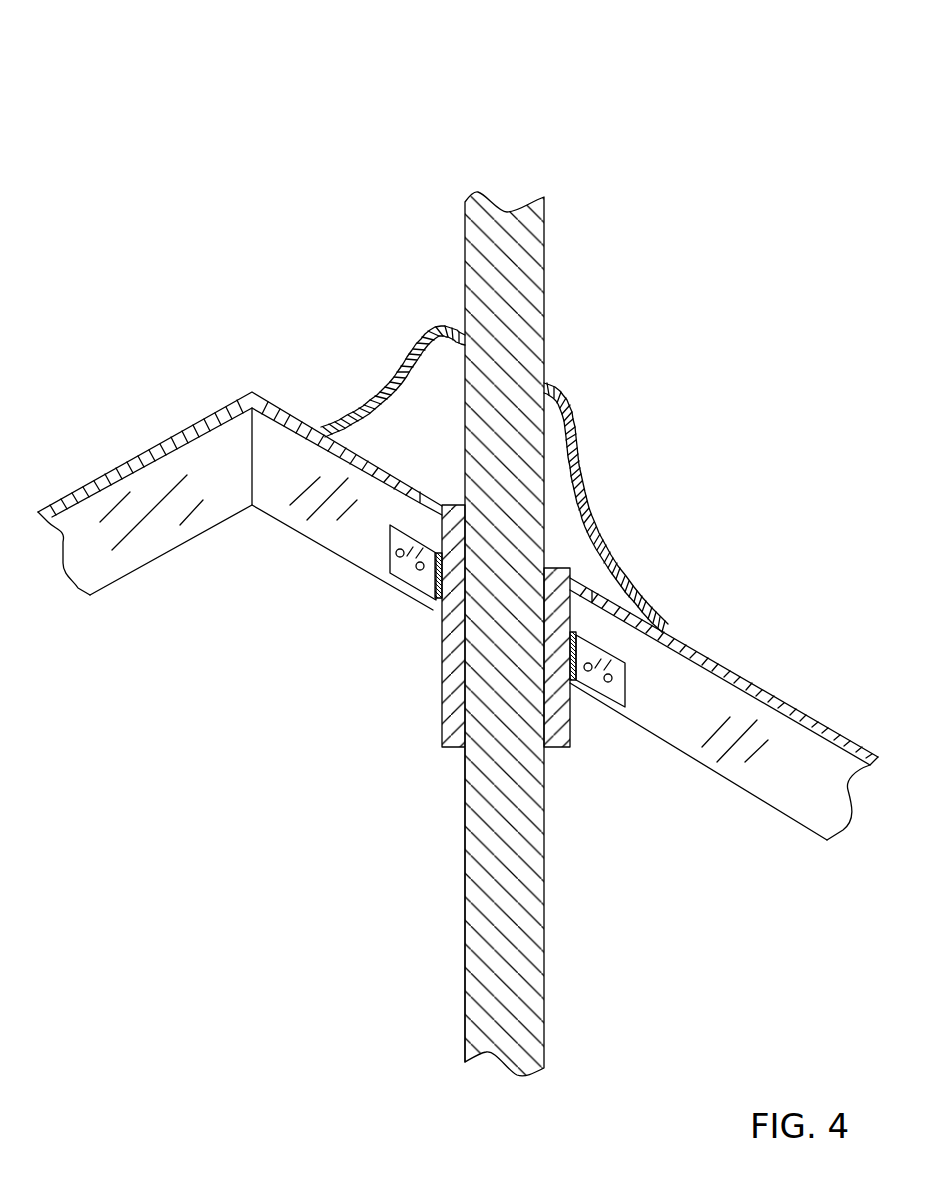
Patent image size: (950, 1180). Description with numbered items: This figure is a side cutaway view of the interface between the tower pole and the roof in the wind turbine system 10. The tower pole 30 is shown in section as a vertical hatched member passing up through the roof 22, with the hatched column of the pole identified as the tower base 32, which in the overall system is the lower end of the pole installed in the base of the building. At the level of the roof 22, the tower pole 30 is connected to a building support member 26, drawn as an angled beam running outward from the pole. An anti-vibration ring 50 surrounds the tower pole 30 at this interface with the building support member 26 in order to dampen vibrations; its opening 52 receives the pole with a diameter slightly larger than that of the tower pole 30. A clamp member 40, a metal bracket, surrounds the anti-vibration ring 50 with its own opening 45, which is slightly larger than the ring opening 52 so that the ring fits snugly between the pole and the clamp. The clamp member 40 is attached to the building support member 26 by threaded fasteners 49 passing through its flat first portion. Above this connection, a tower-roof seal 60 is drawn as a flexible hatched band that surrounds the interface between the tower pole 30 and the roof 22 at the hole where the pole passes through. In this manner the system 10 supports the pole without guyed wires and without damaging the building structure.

The wind turbine system 10 is at (205, 126).
The roof 22 is at (747, 682).
The building support member 26 is at (773, 783).
The tower pole 30 is at (545, 278).
The tower base 32 is at (470, 257).
The clamp member 40 is at (413, 578).
The opening 45 is at (438, 605).
The threaded fasteners 49 is at (396, 553).
The anti-vibration ring 50 is at (442, 682).
The opening 52 is at (465, 748).
The tower-roof seal 60 is at (590, 507).